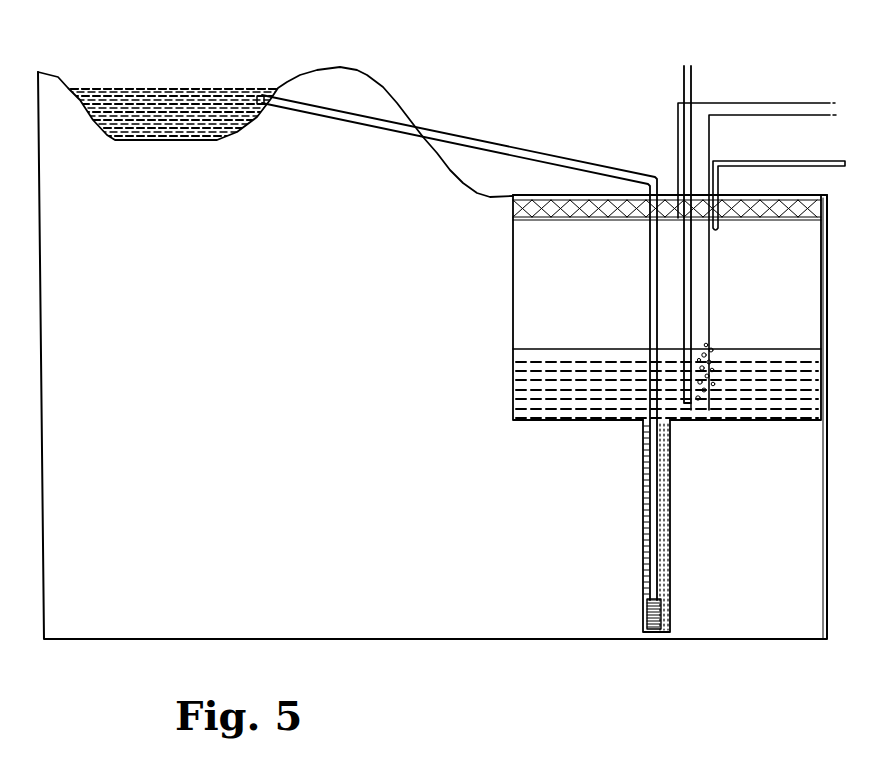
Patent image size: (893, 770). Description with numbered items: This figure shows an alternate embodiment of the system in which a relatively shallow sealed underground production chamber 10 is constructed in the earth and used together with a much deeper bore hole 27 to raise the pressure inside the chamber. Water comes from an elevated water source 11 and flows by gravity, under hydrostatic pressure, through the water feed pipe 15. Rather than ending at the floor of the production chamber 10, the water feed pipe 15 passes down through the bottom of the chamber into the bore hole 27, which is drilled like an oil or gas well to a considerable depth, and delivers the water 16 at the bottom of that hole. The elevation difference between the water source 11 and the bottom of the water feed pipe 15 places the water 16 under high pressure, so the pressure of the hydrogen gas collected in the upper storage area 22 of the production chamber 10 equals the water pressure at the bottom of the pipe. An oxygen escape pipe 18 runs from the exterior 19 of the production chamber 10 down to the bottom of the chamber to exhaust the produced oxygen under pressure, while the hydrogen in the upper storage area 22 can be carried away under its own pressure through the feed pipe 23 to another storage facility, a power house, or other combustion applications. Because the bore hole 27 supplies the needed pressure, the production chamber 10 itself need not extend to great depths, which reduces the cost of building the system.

The production chamber 10 is at (513, 272).
The water source 11 is at (135, 88).
The water feed pipe 15 is at (437, 131).
The water 16 is at (648, 613).
The oxygen escape pipe 18 is at (690, 88).
The exterior 19 is at (722, 196).
The upper storage area 22 is at (538, 305).
The feed pipe 23 is at (733, 159).
The bore hole 27 is at (672, 561).